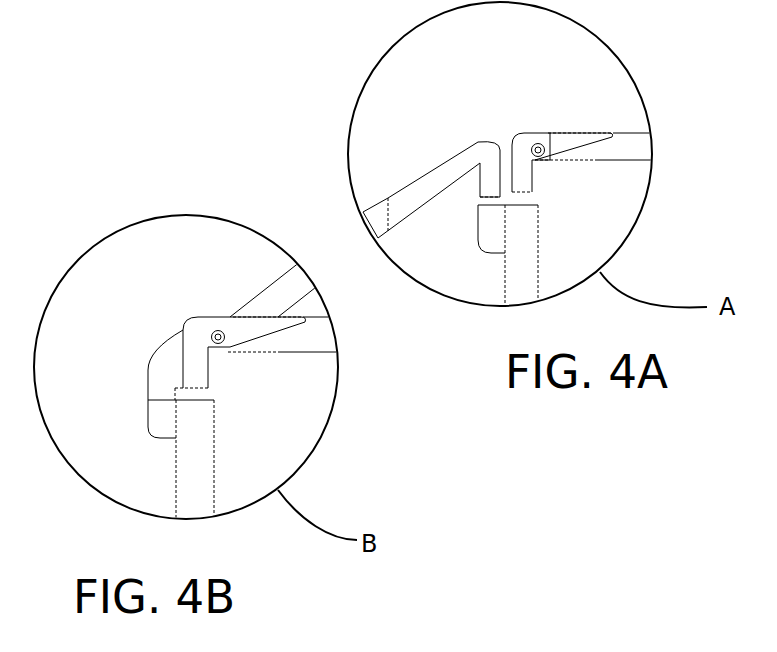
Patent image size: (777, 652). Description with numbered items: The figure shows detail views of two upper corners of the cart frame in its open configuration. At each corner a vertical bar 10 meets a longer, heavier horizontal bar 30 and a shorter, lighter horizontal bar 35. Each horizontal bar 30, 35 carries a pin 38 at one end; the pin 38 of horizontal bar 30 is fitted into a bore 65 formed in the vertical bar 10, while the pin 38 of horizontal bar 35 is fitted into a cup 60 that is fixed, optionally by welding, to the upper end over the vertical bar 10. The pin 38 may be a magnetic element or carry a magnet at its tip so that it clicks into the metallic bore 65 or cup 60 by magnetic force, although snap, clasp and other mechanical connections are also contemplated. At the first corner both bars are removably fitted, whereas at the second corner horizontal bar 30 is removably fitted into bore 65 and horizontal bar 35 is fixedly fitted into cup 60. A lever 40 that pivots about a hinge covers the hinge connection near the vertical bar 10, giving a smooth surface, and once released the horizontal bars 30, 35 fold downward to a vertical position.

In FIG. 4A, the vertical bar 10 is at (538, 270).
In FIG. 4B, the vertical bar 10 is at (178, 487).
In FIG. 4A, the horizontal bar 30 is at (637, 133).
In FIG. 4B, the horizontal bar 30 is at (302, 353).
In FIG. 4A, the horizontal bar 35 is at (372, 208).
In FIG. 4B, the horizontal bar 35 is at (267, 285).
In FIG. 4A, the pin 38 is at (528, 172).
In FIG. 4B, the pin 38 is at (150, 377).
In FIG. 4A, the lever 40 is at (582, 132).
In FIG. 4B, the lever 40 is at (235, 322).
In FIG. 4A, the cup 60 is at (485, 240).
In FIG. 4B, the cup 60 is at (157, 425).
In FIG. 4A, the bore 65 is at (525, 203).